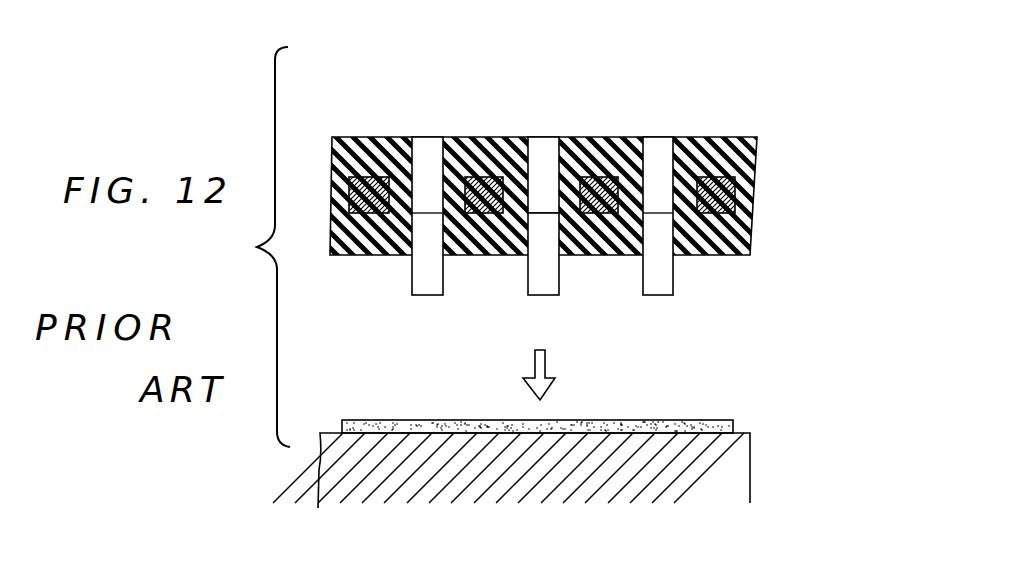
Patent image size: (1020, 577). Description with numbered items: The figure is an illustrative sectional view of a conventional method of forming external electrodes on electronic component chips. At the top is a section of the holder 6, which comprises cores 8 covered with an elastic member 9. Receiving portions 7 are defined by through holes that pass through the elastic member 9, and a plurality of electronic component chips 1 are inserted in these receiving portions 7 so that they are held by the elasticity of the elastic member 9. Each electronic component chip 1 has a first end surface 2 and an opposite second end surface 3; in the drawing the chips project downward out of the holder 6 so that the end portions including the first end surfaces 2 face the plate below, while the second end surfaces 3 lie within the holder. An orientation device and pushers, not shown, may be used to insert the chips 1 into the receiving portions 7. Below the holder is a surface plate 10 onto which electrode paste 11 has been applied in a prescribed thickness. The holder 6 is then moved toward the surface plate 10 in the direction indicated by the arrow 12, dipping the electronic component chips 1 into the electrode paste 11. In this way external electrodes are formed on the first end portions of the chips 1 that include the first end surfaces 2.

The electronic component chip 1 is at (420, 288).
The first end surface 2 is at (533, 297).
The second end surface 3 is at (537, 213).
The holder 6 is at (758, 165).
The receiving portion 7 is at (655, 145).
The core 8 is at (600, 177).
The elastic member 9 is at (455, 150).
The surface plate 10 is at (745, 485).
The electrode paste 11 is at (718, 420).
The arrow 12 is at (546, 356).